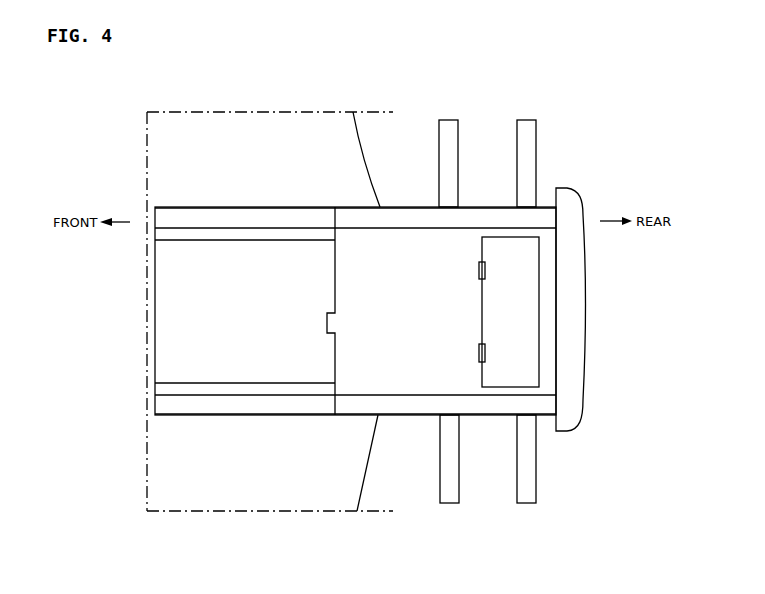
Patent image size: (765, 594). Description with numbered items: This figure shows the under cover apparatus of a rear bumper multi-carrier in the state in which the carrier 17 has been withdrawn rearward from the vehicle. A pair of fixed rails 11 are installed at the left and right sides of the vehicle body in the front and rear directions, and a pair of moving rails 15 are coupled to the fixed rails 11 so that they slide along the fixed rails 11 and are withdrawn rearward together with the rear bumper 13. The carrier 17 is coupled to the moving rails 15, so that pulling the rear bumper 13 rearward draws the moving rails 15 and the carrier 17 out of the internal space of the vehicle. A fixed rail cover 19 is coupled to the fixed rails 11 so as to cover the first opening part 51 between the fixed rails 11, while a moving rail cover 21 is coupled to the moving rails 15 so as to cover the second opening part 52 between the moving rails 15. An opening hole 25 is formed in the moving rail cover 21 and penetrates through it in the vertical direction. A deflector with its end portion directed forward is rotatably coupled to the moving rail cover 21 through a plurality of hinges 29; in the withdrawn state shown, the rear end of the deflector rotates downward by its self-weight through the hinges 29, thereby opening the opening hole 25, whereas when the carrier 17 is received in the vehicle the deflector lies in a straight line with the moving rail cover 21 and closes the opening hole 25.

The fixed rail 11 is at (253, 215).
The rear bumper 13 is at (577, 295).
The moving rail 15 is at (403, 215).
The carrier 17 is at (522, 120).
The fixed rail cover 19 is at (175, 312).
The moving rail cover 21 is at (367, 367).
The opening hole 25 is at (530, 347).
The hinge 29 is at (478, 270).
The first opening part 51 is at (243, 332).
The second opening part 52 is at (413, 297).